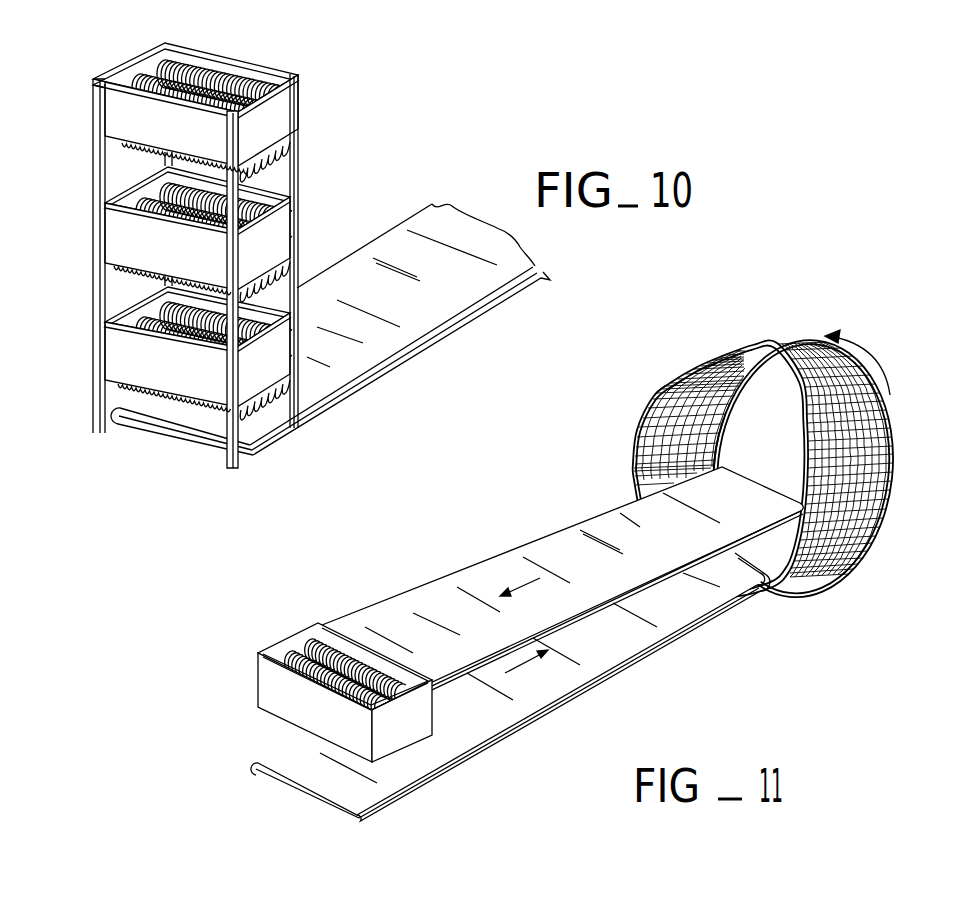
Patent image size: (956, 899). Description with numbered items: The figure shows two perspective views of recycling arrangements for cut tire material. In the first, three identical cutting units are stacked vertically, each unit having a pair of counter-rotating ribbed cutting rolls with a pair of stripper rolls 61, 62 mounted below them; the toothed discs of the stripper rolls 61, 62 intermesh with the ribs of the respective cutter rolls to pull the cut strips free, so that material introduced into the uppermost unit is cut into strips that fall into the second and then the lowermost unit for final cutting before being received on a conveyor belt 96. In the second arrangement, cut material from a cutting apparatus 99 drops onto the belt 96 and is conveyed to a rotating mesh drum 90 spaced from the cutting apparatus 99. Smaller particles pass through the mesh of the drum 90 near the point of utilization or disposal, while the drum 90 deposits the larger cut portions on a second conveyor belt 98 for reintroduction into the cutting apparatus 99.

In FIG. 10, the stripper roll 61 is at (125, 152).
In FIG. 10, the stripper roll 62 is at (283, 157).
In FIG. 11, the drum 90 is at (745, 358).
In FIG. 10, the conveyor belt 96 is at (428, 308).
In FIG. 11, the conveyor belt 96 is at (605, 653).
In FIG. 11, the second conveyor belt 98 is at (513, 552).
In FIG. 11, the cutting apparatus 99 is at (268, 687).